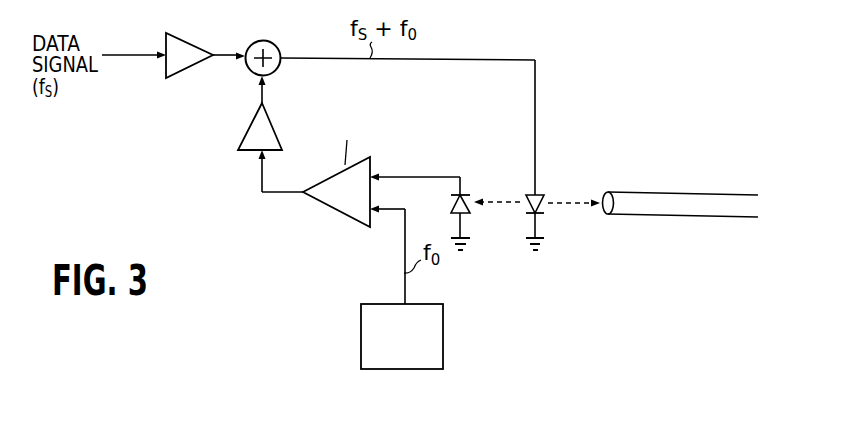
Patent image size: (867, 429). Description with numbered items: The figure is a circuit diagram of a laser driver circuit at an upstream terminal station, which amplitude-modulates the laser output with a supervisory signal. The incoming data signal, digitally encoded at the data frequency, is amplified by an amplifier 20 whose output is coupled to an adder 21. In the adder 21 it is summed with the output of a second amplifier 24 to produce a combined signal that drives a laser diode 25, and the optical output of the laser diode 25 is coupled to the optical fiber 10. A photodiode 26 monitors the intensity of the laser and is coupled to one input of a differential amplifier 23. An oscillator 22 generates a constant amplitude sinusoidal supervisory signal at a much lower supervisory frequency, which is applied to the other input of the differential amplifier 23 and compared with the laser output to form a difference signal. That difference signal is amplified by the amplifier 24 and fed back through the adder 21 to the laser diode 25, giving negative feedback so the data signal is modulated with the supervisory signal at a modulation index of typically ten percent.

The optical fiber 10 is at (655, 188).
The amplifier 20 is at (190, 34).
The adder 21 is at (269, 41).
The oscillator 22 is at (434, 304).
The differential amplifier 23 is at (333, 210).
The amplifier 24 is at (267, 118).
The laser diode 25 is at (542, 193).
The photodiode 26 is at (468, 193).